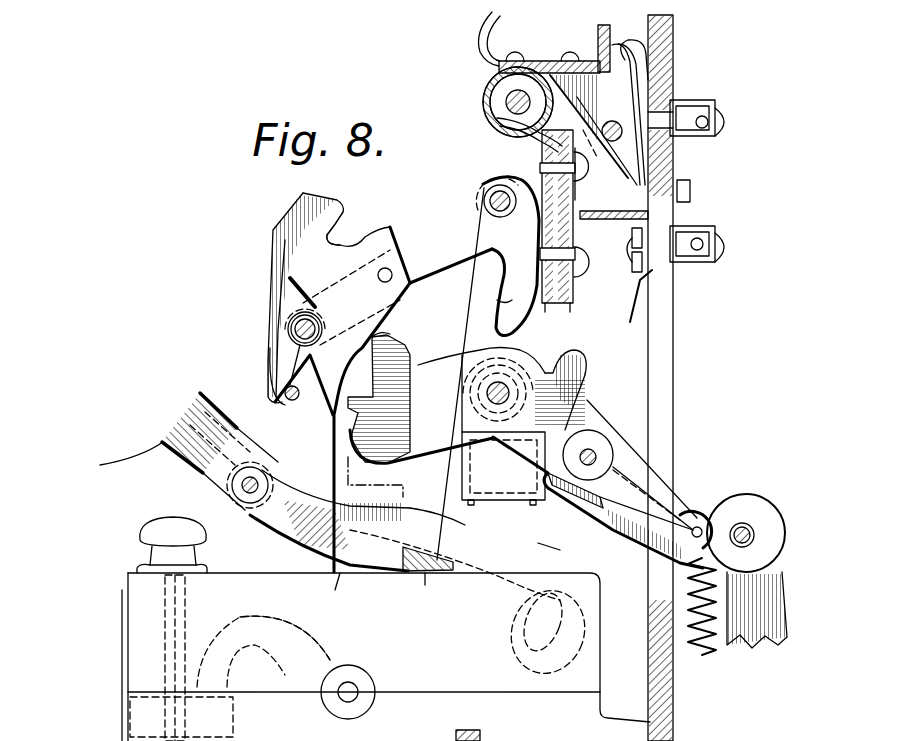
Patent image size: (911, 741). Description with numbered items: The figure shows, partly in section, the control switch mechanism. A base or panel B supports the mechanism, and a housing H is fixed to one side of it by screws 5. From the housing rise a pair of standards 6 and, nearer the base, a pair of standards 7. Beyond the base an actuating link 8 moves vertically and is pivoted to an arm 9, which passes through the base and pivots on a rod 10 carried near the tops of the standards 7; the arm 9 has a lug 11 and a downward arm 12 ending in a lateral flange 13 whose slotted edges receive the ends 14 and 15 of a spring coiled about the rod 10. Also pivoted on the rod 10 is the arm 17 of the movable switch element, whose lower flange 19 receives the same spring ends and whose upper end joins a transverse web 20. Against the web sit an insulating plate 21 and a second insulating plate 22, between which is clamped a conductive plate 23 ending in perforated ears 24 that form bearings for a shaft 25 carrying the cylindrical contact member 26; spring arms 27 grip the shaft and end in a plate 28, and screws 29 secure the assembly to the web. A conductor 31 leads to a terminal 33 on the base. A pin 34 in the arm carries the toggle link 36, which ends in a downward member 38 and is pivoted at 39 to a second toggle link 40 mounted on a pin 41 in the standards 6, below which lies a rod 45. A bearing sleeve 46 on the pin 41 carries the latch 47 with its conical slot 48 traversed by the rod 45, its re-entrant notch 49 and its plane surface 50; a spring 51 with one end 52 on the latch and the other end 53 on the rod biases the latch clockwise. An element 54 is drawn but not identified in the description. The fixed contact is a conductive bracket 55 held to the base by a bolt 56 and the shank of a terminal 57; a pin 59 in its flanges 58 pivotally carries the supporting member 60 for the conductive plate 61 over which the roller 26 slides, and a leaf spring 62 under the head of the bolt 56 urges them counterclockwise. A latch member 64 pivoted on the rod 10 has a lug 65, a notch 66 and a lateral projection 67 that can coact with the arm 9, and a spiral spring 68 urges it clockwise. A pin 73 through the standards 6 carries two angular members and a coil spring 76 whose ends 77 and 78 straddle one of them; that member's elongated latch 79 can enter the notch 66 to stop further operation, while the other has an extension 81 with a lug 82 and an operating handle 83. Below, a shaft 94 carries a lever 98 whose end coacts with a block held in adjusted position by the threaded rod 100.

The screws 5 is at (411, 75).
The standards 6 is at (402, 35).
The standards 7 is at (553, 550).
The actuating member or link 8 is at (756, 642).
The arm 9 is at (637, 553).
The rod 10 is at (504, 381).
The lug 11 is at (577, 372).
The downwardly extending arm 12 is at (547, 490).
The lateral flange 13 is at (480, 508).
The spring end 14 is at (443, 562).
The spring end 15 is at (455, 565).
The arm 17 is at (477, 343).
The flange 19 is at (462, 472).
The transverse web 20 is at (547, 305).
The insulating plate 21 is at (565, 305).
The insulating plate 22 is at (570, 278).
The conductive plate-like member 23 is at (572, 285).
The perforated ears 24 is at (560, 140).
The supporting rod or shaft 25 is at (500, 90).
The cylindrical contact member 26 is at (491, 103).
The spring arms 27 is at (486, 136).
The plate 28 is at (541, 230).
The screws 29 is at (585, 183).
The conductor 31 is at (632, 325).
The binding post or terminal 33 is at (700, 262).
The pin 34 is at (484, 208).
The link 36 is at (452, 268).
The downwardly extending member 38 is at (506, 306).
The pivot 39 is at (384, 266).
The link 40 is at (327, 277).
The pin or rod 41 is at (298, 332).
The rod 45 is at (294, 401).
The bearing sleeve 46 is at (297, 318).
The latch 47 is at (273, 290).
The conical shaped slot 48 is at (306, 408).
The re-entrant notch 49 is at (343, 233).
The plane surface 50 is at (356, 286).
The spring 51 is at (294, 326).
The spring end 52 is at (290, 278).
The spring end 53 is at (277, 393).
The pivot screw 54 is at (480, 183).
The conductive bracket 55 is at (622, 50).
The bolt 56 is at (678, 206).
The binding post or terminal 57 is at (718, 136).
The lateral flanges 58 is at (655, 62).
The pin 59 is at (672, 160).
The supporting member 60 is at (606, 143).
The conductive plate 61 is at (522, 72).
The leaf spring 62 is at (618, 30).
The latch member 64 is at (582, 416).
The lug 65 is at (402, 391).
The notch 66 is at (362, 425).
The lateral projection 67 is at (680, 508).
The spiral spring 68 is at (698, 656).
The pin or rod 73 is at (241, 487).
The coil spring 76 is at (253, 453).
The spring end 77 is at (140, 458).
The spring end 78 is at (198, 393).
The elongated latch 79 is at (332, 624).
The extension 81 is at (420, 574).
The lug 82 is at (330, 588).
The operating handle 83 is at (541, 670).
The rod or shaft 94 is at (343, 694).
The arm or lever 98 is at (270, 620).
The threaded rod 100 is at (162, 598).
The base or panel B is at (670, 82).
The housing H is at (115, 690).